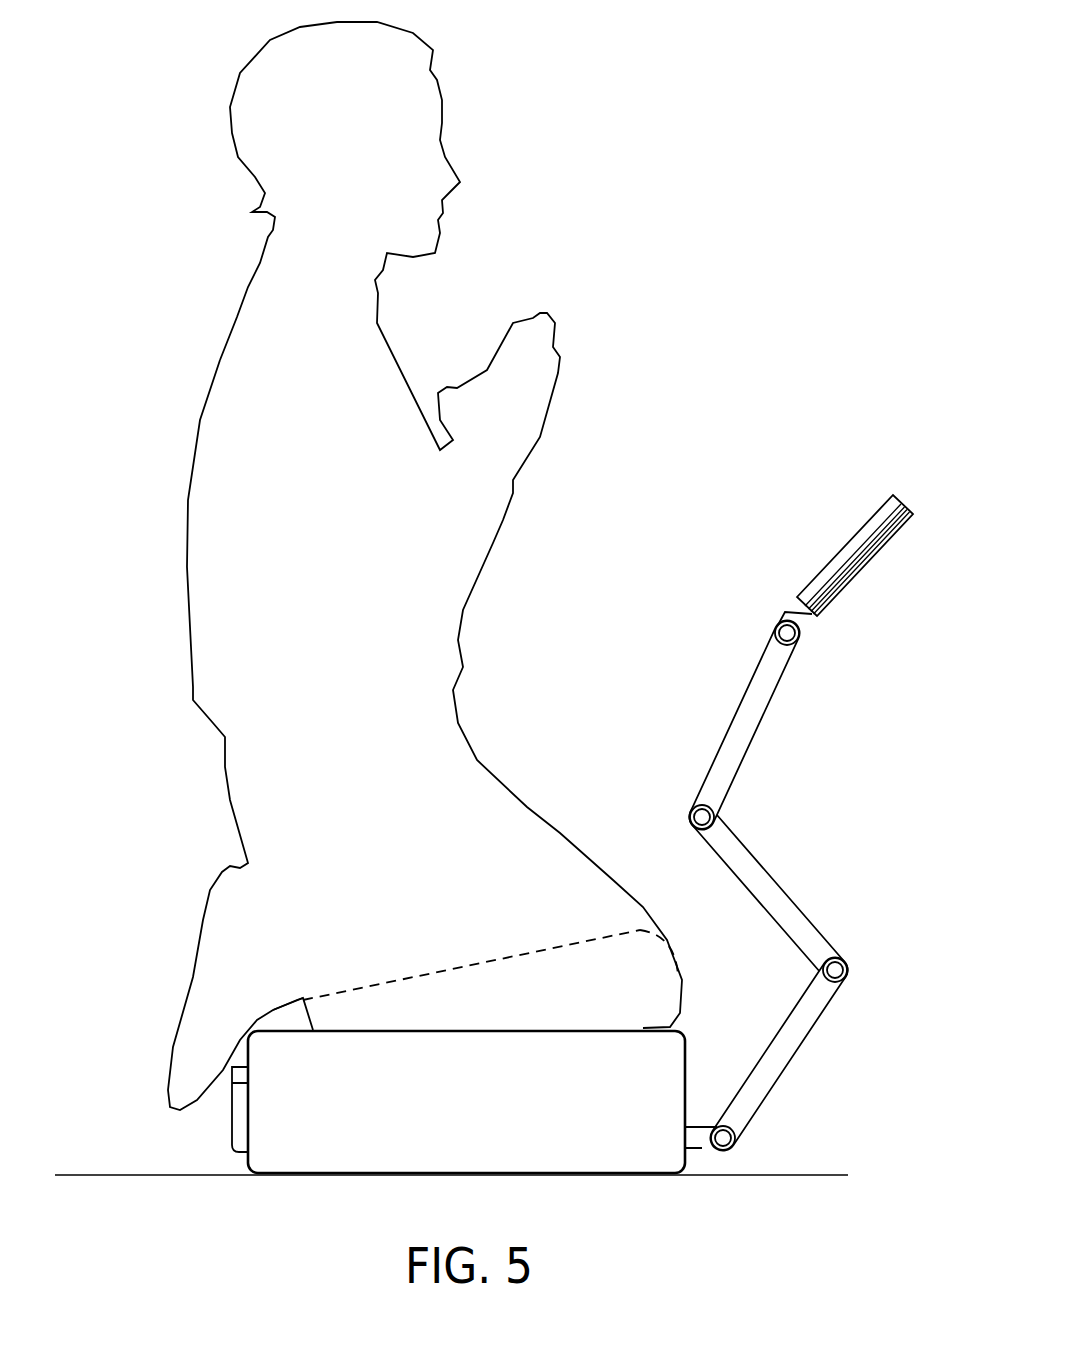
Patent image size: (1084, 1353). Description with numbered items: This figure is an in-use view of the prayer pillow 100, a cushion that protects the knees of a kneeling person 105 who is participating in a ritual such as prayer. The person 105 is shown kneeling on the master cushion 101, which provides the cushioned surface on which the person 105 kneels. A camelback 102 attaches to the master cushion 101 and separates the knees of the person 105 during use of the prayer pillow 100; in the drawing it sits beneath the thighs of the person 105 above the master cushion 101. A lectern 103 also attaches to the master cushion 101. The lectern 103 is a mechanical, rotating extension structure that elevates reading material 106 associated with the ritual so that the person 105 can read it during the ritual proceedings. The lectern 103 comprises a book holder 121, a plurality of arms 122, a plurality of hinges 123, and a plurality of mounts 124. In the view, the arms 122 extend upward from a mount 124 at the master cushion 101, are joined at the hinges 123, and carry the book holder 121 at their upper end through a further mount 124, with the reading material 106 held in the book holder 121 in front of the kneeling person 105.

The prayer pillow 100 is at (675, 1187).
The master cushion 101 is at (617, 1147).
The camelback 102 is at (635, 950).
The lectern 103 is at (780, 890).
The kneeling person 105 is at (453, 553).
The reading material 106 is at (853, 540).
The book holder 121 is at (848, 588).
The arm 122 is at (810, 937).
The hinge 123 is at (702, 820).
The mount 124 is at (802, 625).